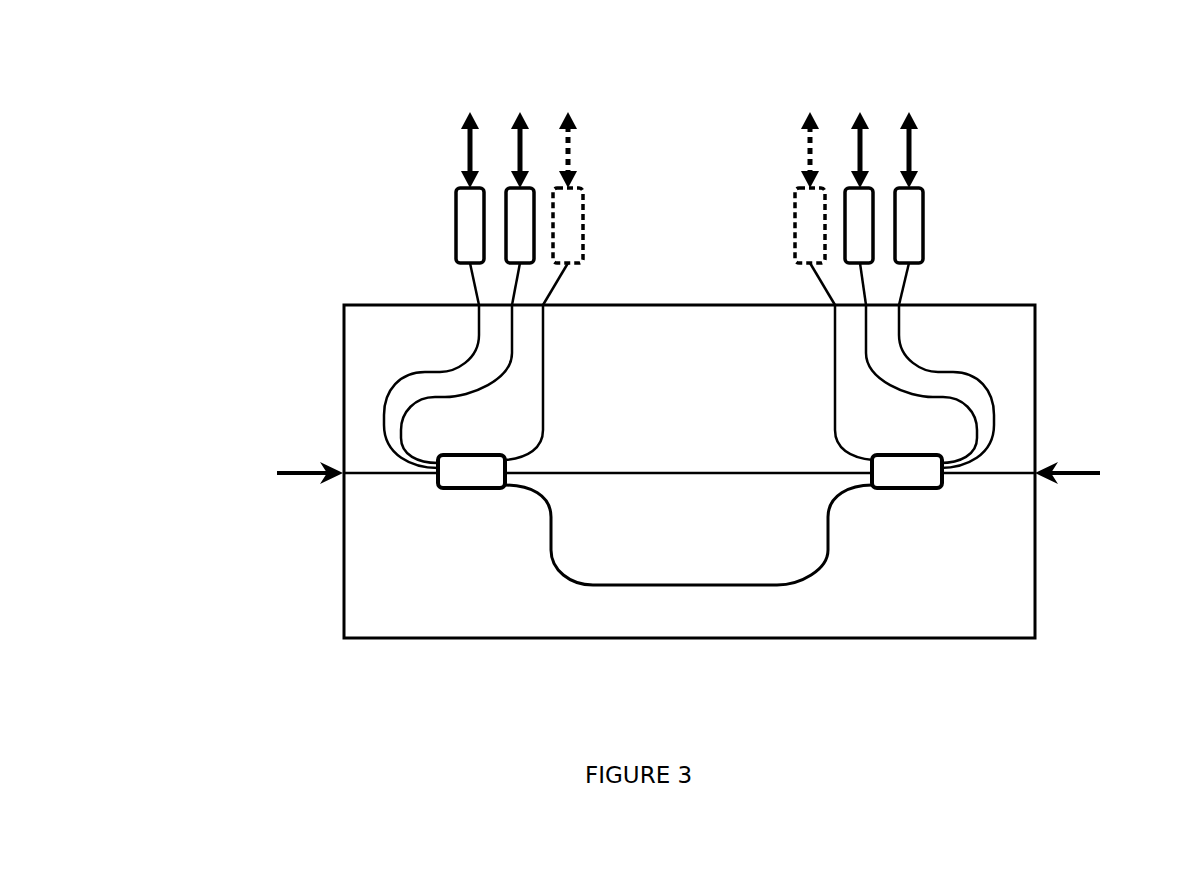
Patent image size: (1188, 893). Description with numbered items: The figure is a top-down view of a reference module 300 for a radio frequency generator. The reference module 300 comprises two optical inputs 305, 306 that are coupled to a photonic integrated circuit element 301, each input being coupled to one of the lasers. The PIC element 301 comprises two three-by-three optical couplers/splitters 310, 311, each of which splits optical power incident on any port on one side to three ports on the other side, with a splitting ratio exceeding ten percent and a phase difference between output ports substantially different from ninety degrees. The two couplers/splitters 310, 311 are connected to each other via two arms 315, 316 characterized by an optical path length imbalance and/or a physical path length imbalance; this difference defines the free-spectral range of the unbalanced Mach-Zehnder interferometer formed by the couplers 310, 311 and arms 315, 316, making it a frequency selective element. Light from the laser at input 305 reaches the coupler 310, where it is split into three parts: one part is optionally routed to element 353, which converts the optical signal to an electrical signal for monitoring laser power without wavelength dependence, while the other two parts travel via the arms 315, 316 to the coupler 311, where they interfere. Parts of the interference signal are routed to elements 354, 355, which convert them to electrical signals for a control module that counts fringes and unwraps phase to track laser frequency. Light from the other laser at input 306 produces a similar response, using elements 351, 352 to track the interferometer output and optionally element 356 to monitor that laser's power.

The reference module 300 is at (258, 62).
The photonic integrated circuit element 301 is at (346, 305).
The optical input 305 is at (292, 477).
The optical input 306 is at (1083, 478).
The 3×3 optical coupler/splitter 310 is at (440, 486).
The 3×3 optical coupler/splitter 311 is at (928, 488).
The arm 315 is at (550, 525).
The arm 316 is at (740, 474).
The optical-to-electrical conversion element 351 is at (455, 198).
The optical-to-electrical conversion element 352 is at (505, 192).
The optical-to-electrical conversion element 353 is at (580, 190).
The optical-to-electrical conversion element 354 is at (923, 190).
The optical-to-electrical conversion element 355 is at (877, 213).
The optical-to-electrical conversion element 356 is at (795, 193).